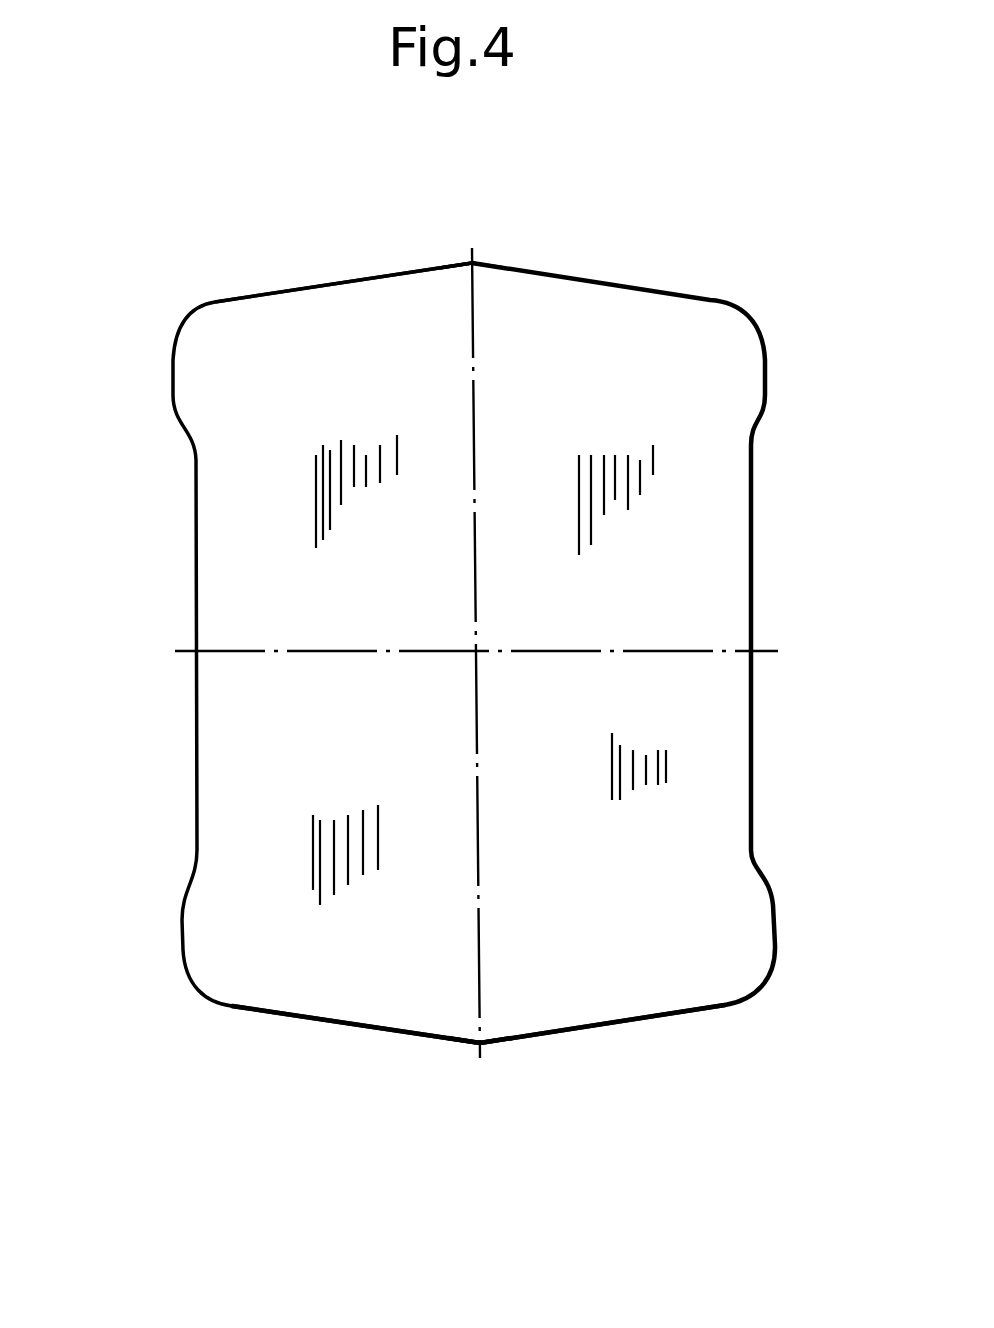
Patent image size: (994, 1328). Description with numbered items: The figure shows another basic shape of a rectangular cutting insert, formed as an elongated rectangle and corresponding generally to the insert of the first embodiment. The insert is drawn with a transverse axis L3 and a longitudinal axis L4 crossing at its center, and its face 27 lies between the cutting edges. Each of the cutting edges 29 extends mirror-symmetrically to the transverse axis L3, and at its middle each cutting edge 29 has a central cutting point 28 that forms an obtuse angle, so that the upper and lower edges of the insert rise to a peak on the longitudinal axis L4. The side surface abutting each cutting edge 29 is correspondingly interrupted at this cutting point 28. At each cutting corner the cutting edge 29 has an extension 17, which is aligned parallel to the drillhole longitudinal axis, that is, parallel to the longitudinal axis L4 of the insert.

The extension 17 is at (172, 362).
The flat surface 27 is at (683, 610).
The cutting point 28 is at (478, 257).
The cutting edge 29 is at (331, 282).
The transverse axis L3 is at (340, 651).
The longitudinal axis L4 is at (480, 857).